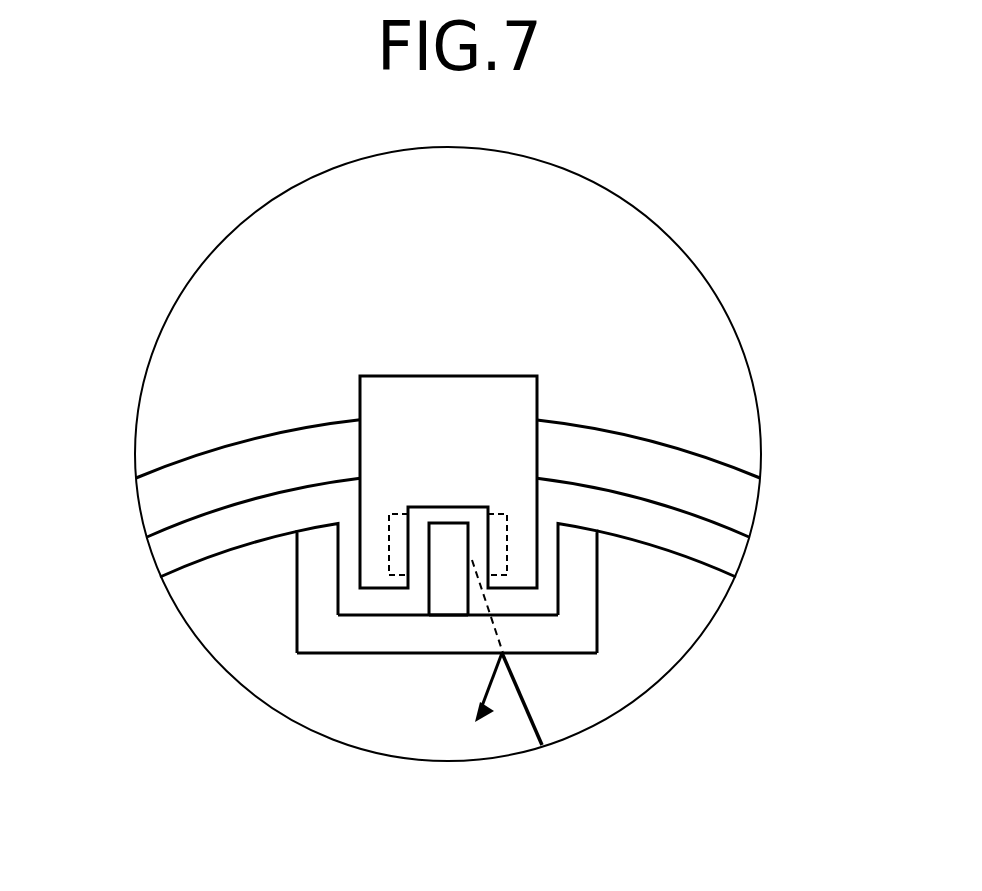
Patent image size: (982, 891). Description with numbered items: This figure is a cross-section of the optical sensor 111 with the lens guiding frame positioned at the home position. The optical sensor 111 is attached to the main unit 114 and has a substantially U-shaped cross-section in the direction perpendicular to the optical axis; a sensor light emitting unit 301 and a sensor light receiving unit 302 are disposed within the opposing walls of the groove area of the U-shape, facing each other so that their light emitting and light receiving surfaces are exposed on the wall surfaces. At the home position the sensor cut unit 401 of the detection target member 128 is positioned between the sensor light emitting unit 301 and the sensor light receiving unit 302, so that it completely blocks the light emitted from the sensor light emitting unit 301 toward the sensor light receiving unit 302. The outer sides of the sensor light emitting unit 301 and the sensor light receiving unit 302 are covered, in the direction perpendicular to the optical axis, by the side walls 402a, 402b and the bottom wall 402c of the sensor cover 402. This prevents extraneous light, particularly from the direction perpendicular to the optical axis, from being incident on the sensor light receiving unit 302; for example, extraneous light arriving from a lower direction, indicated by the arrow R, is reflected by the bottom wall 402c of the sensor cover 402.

The optical sensor 111 is at (405, 375).
The main unit 114 is at (605, 455).
The sensor cover 402 is at (463, 661).
The side wall 402a is at (318, 572).
The side wall 402b is at (583, 575).
The bottom wall 402c is at (418, 640).
The sensor cut unit 401 is at (448, 570).
The sensor light emitting unit 301 is at (412, 568).
The sensor light receiving unit 302 is at (474, 573).
The detection target member 128 is at (462, 617).
The arrow R is at (537, 717).